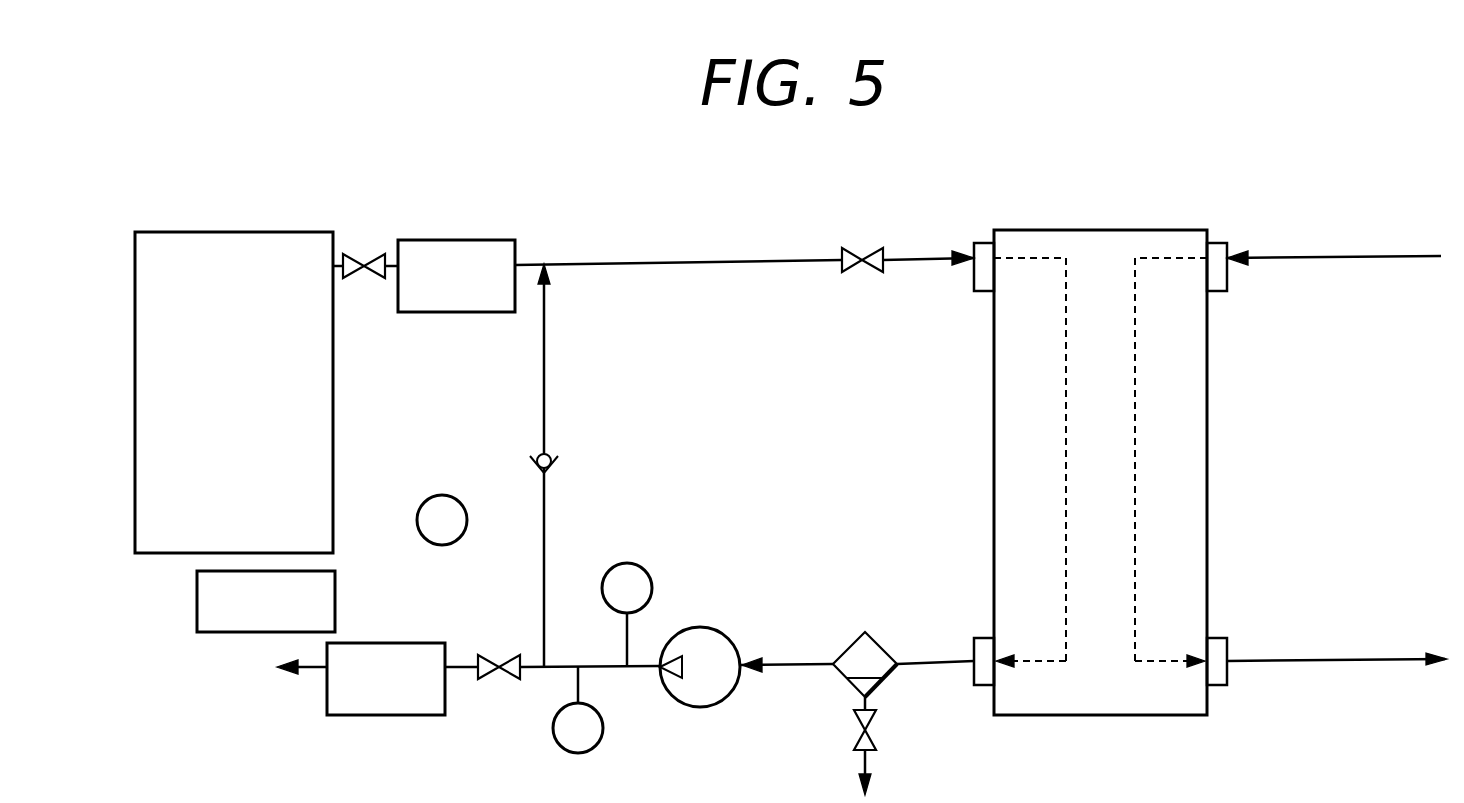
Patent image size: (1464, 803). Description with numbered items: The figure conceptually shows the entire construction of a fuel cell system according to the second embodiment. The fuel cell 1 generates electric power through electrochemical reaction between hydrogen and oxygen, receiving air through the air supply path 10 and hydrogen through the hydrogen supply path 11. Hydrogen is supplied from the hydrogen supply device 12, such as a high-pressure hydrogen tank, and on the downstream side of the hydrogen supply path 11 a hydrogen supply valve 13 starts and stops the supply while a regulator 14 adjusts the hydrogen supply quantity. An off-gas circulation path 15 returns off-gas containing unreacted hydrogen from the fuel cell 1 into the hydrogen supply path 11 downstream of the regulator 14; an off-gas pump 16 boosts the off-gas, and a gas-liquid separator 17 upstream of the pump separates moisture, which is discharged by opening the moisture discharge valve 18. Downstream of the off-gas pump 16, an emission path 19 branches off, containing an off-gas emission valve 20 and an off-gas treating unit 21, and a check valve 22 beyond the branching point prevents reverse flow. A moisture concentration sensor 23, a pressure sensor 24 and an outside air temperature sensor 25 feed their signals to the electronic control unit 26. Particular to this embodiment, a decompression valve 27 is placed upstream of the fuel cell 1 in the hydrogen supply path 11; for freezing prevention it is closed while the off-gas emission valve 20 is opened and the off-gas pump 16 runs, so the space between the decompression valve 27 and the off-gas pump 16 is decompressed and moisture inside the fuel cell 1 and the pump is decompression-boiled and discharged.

The fuel cell 1 is at (1128, 230).
The air supply path 10 is at (1340, 257).
The hydrogen supply path 11 is at (722, 262).
The hydrogen supply device 12 is at (264, 232).
The hydrogen supply valve 13 is at (362, 254).
The regulator 14 is at (474, 240).
The off-gas circulation path 15 is at (546, 534).
The off-gas pump 16 is at (696, 707).
The gas-liquid separator 17 is at (890, 683).
The moisture discharge valve 18 is at (854, 736).
The emission path 19 is at (463, 668).
The off-gas emission valve 20 is at (504, 679).
The off-gas treating unit 21 is at (360, 716).
The check valve 22 is at (550, 455).
The moisture concentration sensor 23 is at (630, 564).
The pressure sensor 24 is at (573, 752).
The outside air temperature sensor 25 is at (446, 496).
The electronic control unit 26 is at (218, 633).
The decompression valve 27 is at (858, 248).